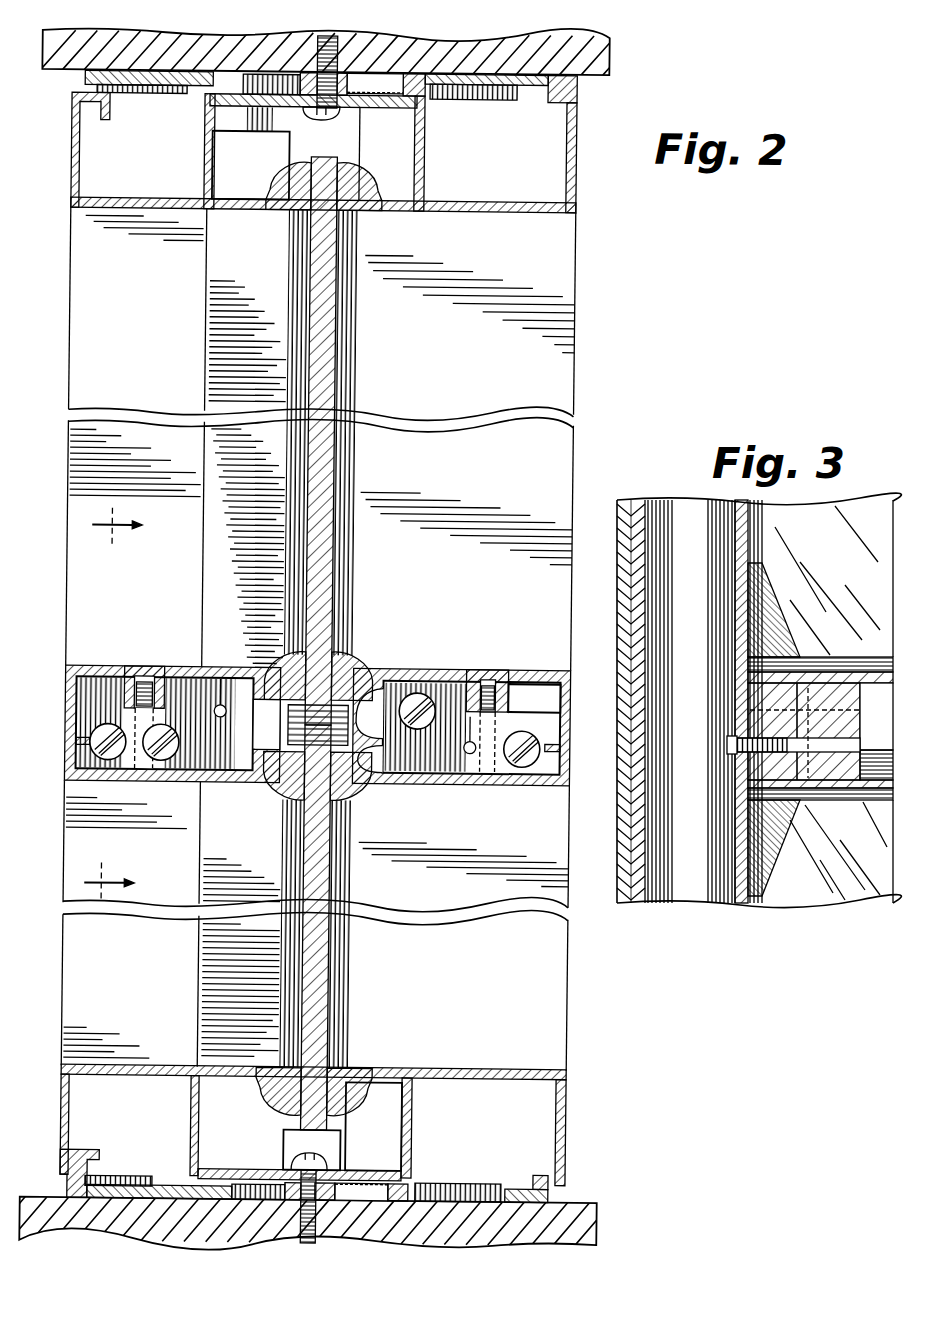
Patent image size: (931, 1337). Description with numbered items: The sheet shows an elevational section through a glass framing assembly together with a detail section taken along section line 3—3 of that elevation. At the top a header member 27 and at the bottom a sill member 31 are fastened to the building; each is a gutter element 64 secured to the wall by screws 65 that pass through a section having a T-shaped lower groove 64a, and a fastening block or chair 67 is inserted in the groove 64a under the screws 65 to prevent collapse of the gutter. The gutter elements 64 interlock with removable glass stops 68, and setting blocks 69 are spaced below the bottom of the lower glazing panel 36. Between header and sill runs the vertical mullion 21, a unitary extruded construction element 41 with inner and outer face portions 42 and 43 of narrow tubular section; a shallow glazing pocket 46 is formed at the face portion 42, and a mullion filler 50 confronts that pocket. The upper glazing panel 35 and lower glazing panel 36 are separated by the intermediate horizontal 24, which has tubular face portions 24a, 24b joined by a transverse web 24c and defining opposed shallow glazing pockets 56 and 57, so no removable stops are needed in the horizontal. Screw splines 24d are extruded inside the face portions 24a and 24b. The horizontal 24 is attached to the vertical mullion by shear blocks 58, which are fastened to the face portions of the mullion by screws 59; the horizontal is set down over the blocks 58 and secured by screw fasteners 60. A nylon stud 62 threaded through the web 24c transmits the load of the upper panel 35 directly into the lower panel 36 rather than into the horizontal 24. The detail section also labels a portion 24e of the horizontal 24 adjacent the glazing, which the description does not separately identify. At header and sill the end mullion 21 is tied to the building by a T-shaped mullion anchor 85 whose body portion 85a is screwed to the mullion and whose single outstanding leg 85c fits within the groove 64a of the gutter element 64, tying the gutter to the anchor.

In FIG. 2, the section line 3 is at (124, 705).
In FIG. 2, the vertical mullion 21 is at (313, 639).
In FIG. 3, the vertical mullion 21 is at (681, 903).
In FIG. 2, the intermediate horizontal 24 is at (312, 715).
In FIG. 3, the intermediate horizontal 24 is at (784, 725).
In FIG. 2, the tubular face portion 24a is at (67, 712).
In FIG. 2, the tubular face portion 24b is at (565, 698).
In FIG. 2, the intermediate transverse web 24c is at (286, 714).
In FIG. 2, the screw splines 24d is at (140, 678).
In FIG. 3, the rail flange 24e is at (838, 790).
In FIG. 2, the header member 27 is at (572, 143).
In FIG. 2, the sill member 31 is at (572, 1081).
In FIG. 2, the glazing panel 35 is at (330, 388).
In FIG. 3, the glazing panel 35 is at (866, 505).
In FIG. 2, the glazing panel 36 is at (306, 845).
In FIG. 3, the glazing panel 36 is at (856, 892).
In FIG. 2, the construction element 41 is at (78, 375).
In FIG. 2, the inner face portion 42 is at (573, 439).
In FIG. 2, the outer face portion 43 is at (66, 439).
In FIG. 2, the shallow glazing pocket 46 is at (350, 150).
In FIG. 2, the mullion filler 50 is at (216, 366).
In FIG. 2, the shallow glazing pocket 56 is at (348, 666).
In FIG. 2, the shallow glazing pocket 57 is at (373, 746).
In FIG. 2, the shear block 58 is at (95, 722).
In FIG. 3, the shear block 58 is at (757, 721).
In FIG. 2, the screws 59 is at (165, 762).
In FIG. 3, the screws 59 is at (727, 746).
In FIG. 2, the screw fasteners 60 is at (149, 685).
In FIG. 3, the screw fasteners 60 is at (808, 672).
In FIG. 2, the nylon stud 62 is at (350, 726).
In FIG. 2, the gutter element 64 is at (572, 187).
In FIG. 2, the T-shaped lower groove 64a is at (400, 73).
In FIG. 2, the screws 65 is at (322, 44).
In FIG. 2, the fastening block or chair 67 is at (336, 106).
In FIG. 2, the glass stop 68 is at (67, 140).
In FIG. 2, the setting block 69 is at (340, 1140).
In FIG. 2, the mullion anchor 85 is at (478, 93).
In FIG. 2, the body portion 85a is at (136, 93).
In FIG. 2, the outstanding leg 85c is at (266, 75).